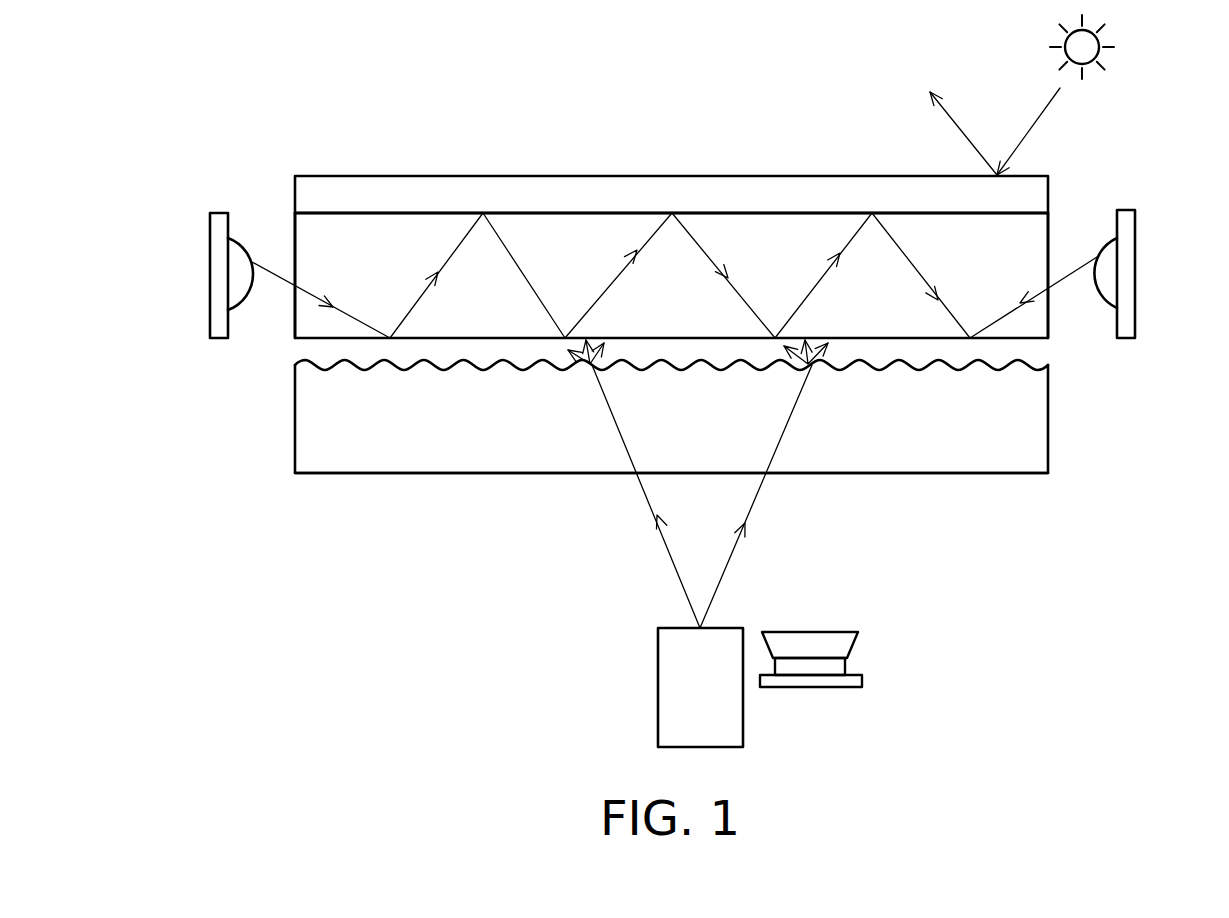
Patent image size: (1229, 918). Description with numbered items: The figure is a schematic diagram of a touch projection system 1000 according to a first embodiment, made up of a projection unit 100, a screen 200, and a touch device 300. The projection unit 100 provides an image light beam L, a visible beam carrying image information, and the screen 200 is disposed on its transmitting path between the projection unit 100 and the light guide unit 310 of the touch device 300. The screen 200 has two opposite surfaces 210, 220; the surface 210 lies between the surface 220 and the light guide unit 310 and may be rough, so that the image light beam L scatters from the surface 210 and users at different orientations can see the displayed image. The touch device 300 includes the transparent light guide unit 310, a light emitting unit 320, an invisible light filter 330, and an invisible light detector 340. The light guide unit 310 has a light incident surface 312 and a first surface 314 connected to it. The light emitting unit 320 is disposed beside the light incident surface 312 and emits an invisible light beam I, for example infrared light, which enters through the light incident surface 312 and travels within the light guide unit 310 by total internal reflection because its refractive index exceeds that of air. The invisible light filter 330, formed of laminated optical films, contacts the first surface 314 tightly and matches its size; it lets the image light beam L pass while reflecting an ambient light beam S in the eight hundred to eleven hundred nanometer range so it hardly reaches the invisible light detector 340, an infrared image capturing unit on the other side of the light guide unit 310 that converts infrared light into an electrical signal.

The touch projection system 1000 is at (1139, 762).
The projection unit 100 is at (668, 697).
The screen 200 is at (728, 423).
The surface 210 is at (1016, 362).
The surface 220 is at (1009, 474).
The touch device 300 is at (226, 533).
The light guide unit 310 is at (675, 213).
The light incident surface 312 is at (293, 246).
The first surface 314 is at (340, 212).
The light emitting unit 320 is at (233, 276).
The invisible light filter 330 is at (1043, 190).
The invisible light detector 340 is at (835, 666).
The ambient light beam S is at (1055, 104).
The image light beam L is at (670, 557).
The invisible light beam I is at (270, 283).